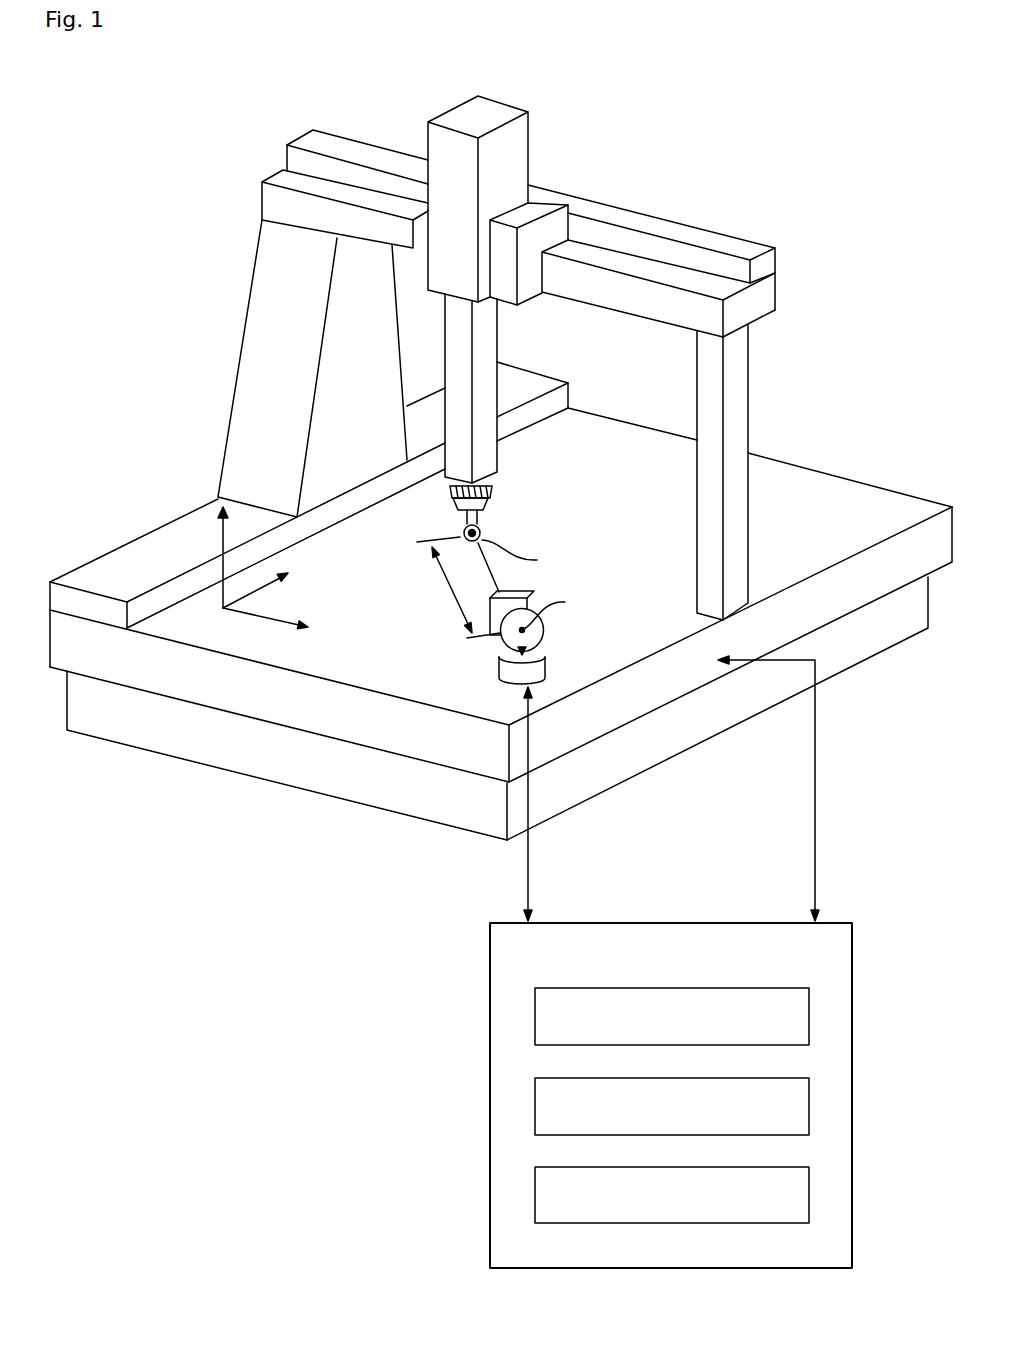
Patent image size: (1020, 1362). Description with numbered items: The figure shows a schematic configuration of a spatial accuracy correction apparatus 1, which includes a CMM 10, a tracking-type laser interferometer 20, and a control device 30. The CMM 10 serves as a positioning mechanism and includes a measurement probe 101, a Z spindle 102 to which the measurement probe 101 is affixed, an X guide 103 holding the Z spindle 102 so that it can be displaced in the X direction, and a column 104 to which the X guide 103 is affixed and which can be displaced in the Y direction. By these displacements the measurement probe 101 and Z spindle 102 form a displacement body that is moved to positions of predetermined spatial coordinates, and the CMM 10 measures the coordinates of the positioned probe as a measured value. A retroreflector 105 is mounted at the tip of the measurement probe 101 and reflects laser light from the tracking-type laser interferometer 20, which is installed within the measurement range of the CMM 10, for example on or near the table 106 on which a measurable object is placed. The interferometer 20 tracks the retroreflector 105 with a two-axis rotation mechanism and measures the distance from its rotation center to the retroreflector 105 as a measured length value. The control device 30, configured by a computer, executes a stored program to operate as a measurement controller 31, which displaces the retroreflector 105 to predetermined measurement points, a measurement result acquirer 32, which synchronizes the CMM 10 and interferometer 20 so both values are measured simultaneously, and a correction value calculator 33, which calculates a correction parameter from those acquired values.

The spatial accuracy correction apparatus 1 is at (890, 255).
The CMM 10 is at (137, 537).
The tracking-type laser interferometer 20 is at (500, 667).
The control device 30 is at (490, 1053).
The measurement controller 31 is at (810, 1017).
The measurement result acquirer 32 is at (810, 1107).
The correction value calculator 33 is at (810, 1195).
The measurement probe 101 is at (493, 505).
The Z spindle 102 is at (485, 343).
The X guide 103 is at (360, 198).
The column 104 is at (267, 373).
The retroreflector 105 is at (482, 532).
The table 106 is at (342, 658).